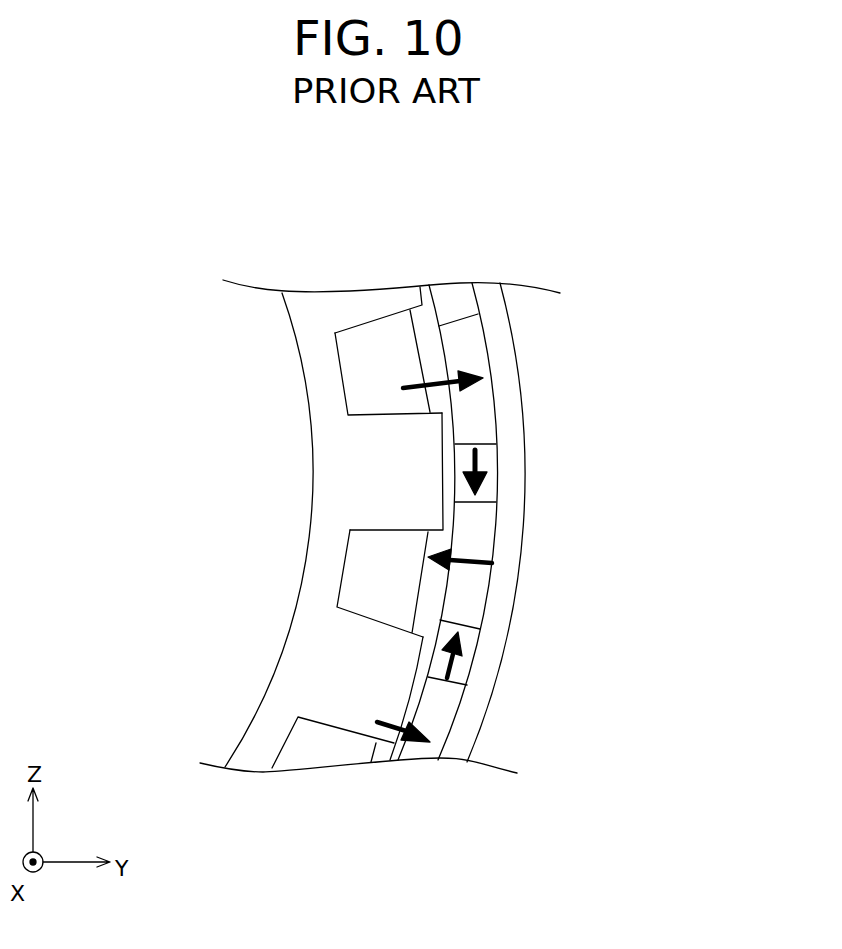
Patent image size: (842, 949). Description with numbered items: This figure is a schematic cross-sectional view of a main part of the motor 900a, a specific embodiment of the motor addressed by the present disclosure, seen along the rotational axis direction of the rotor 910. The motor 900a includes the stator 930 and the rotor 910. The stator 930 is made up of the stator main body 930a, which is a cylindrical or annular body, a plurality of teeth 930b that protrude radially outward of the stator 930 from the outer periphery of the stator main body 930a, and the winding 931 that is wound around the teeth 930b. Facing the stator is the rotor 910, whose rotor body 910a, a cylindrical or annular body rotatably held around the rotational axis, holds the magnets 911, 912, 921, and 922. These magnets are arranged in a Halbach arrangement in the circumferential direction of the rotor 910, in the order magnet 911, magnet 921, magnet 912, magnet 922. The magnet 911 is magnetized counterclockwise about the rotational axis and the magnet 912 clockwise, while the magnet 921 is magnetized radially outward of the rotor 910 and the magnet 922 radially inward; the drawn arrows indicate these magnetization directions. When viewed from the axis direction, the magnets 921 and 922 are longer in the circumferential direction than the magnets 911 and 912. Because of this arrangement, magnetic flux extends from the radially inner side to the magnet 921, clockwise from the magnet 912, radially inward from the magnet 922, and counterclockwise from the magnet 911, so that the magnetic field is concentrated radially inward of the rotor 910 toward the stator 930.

The motor 900a is at (776, 113).
The rotor 910 is at (650, 327).
The rotor body 910a is at (460, 747).
The magnet 911 is at (468, 643).
The magnet 912 is at (493, 460).
The magnet 921 is at (480, 342).
The magnet 922 is at (492, 535).
The stator 930 is at (243, 735).
The stator main body 930a is at (330, 540).
The teeth 930b is at (383, 437).
The winding 931 is at (376, 368).